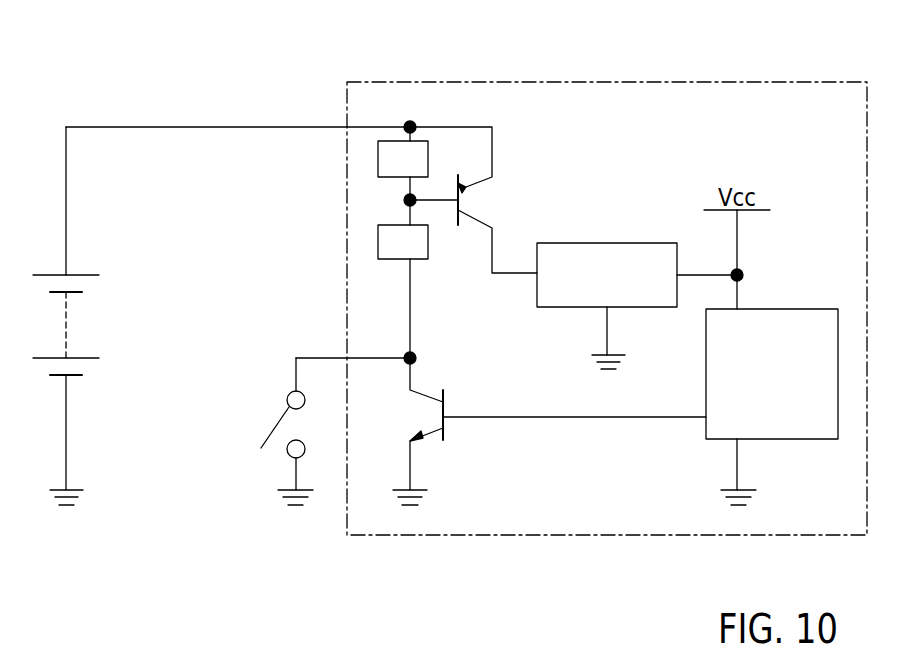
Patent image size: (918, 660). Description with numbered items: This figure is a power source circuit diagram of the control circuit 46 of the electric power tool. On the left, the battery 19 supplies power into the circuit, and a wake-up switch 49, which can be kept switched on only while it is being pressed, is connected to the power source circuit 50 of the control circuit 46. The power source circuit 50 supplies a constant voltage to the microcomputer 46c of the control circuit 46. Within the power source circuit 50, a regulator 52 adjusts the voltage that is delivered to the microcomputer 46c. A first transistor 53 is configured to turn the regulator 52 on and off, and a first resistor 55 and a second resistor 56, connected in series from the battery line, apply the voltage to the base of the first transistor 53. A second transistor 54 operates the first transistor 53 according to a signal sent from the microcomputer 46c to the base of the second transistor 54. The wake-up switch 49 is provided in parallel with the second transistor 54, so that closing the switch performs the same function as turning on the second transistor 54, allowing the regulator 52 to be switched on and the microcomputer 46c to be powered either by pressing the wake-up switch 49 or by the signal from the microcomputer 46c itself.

The battery 19 is at (51, 264).
The control circuit 46 is at (602, 108).
The microcomputer 46c is at (813, 320).
The wake-up switch 49 is at (283, 400).
The power source circuit 50 is at (548, 212).
The regulator 52 is at (605, 247).
The first transistor 53 is at (475, 222).
The second transistor 54 is at (430, 436).
The first resistor 55 is at (378, 160).
The second resistor 56 is at (378, 243).